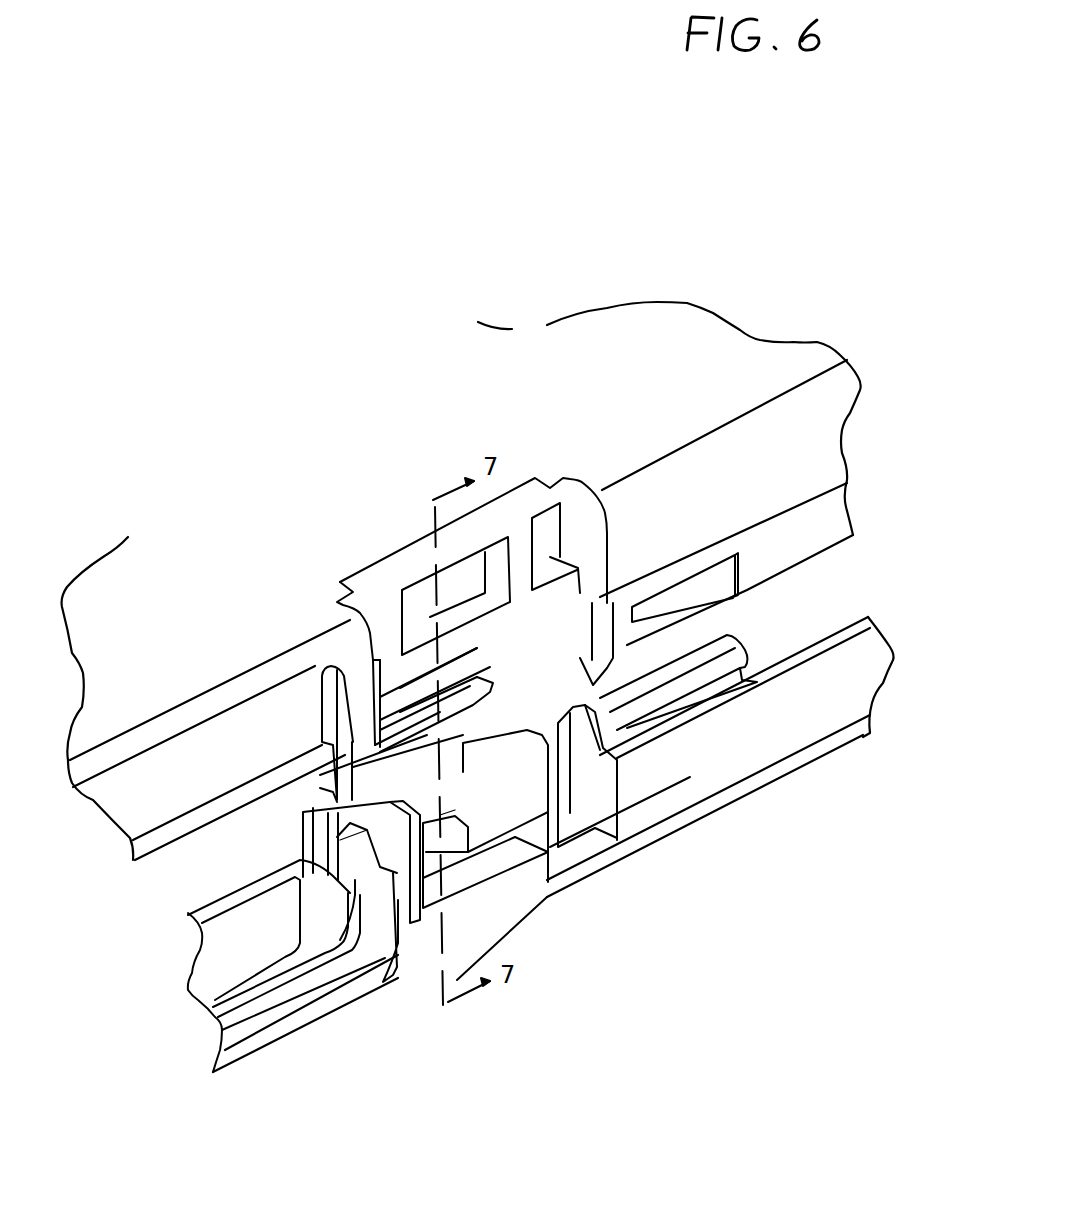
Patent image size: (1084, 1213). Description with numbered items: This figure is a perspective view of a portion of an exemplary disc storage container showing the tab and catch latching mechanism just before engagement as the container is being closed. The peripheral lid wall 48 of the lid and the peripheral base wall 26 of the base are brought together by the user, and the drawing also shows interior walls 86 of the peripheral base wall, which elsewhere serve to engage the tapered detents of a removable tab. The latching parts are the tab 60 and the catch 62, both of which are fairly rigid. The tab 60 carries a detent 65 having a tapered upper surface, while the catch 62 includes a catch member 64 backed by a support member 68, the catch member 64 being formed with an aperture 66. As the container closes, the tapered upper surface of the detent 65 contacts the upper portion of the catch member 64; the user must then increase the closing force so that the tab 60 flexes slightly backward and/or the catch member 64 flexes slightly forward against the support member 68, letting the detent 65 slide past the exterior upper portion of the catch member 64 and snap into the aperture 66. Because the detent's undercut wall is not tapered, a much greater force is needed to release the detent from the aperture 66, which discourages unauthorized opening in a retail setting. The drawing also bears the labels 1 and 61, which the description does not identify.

The connector assembly 1 is at (146, 503).
The peripheral lid wall 48 is at (825, 453).
The peripheral base wall 26 is at (887, 640).
The tab 60 is at (514, 679).
The terminal contact 61 is at (478, 678).
The detent 65 is at (473, 705).
The aperture 66 is at (441, 805).
The support member 68 is at (540, 867).
The interior walls 86 is at (600, 793).
The catch member 64 is at (308, 828).
The catch 62 is at (291, 812).